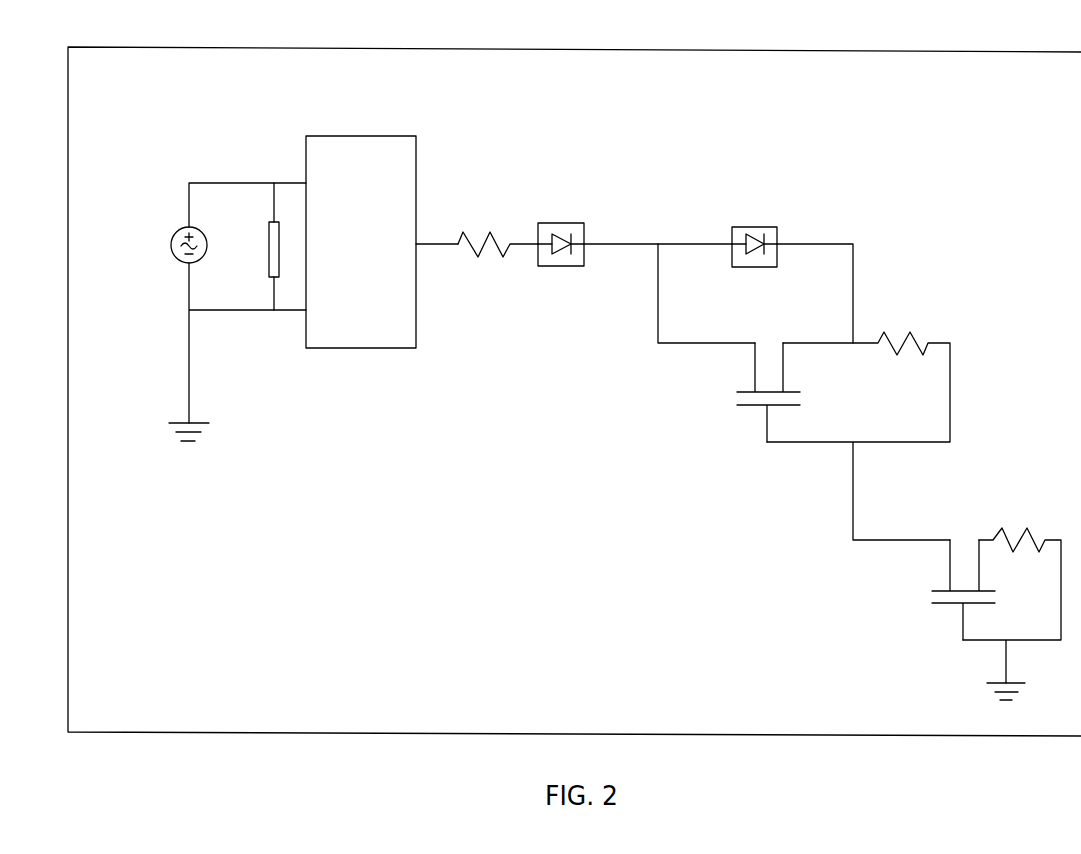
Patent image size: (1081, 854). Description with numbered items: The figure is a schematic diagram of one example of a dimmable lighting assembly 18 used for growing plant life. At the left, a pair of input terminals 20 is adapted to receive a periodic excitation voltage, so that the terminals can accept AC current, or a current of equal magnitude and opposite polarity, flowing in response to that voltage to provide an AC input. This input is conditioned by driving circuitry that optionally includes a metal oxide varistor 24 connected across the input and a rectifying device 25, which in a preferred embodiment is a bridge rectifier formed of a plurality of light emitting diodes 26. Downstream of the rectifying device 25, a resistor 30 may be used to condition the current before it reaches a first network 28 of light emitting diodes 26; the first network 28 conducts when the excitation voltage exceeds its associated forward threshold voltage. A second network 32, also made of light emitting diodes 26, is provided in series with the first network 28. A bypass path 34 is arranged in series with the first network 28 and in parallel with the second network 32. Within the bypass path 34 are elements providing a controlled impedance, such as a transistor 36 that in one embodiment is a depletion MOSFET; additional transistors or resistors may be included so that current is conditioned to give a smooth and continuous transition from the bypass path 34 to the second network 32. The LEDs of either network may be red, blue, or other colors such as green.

The lighting assembly 18 is at (190, 47).
The input terminals 20 is at (220, 183).
The metal oxide varistor 24 is at (277, 242).
The rectifying device 25 is at (360, 136).
The light emitting diodes 26 is at (562, 238).
The first network 28 is at (545, 223).
The resistor 30 is at (463, 232).
The second network 32 is at (737, 225).
The bypass path 34 is at (607, 433).
The transistor 36 is at (800, 392).